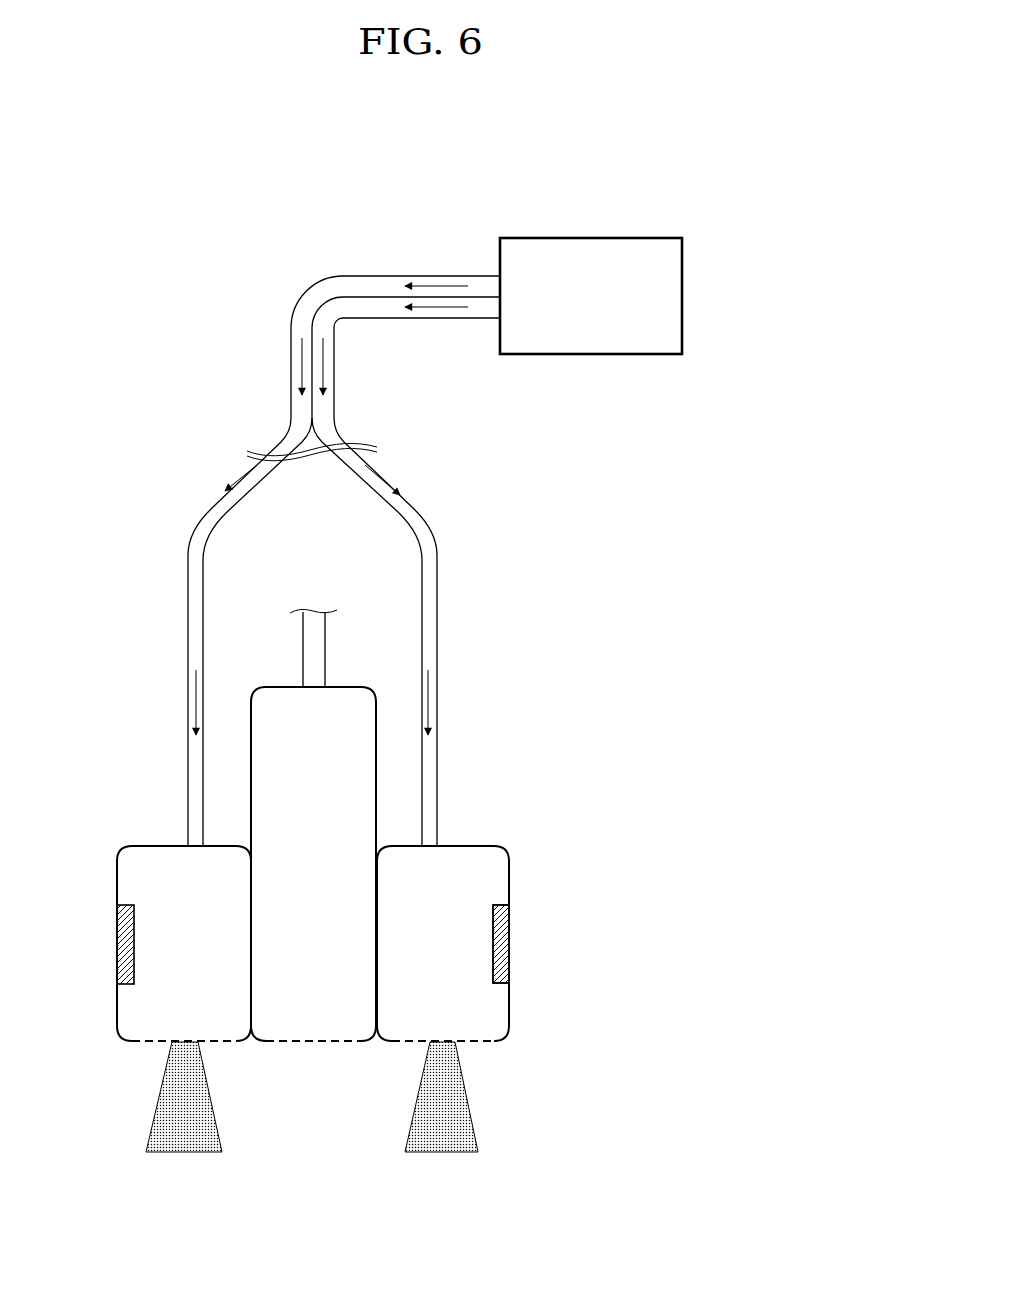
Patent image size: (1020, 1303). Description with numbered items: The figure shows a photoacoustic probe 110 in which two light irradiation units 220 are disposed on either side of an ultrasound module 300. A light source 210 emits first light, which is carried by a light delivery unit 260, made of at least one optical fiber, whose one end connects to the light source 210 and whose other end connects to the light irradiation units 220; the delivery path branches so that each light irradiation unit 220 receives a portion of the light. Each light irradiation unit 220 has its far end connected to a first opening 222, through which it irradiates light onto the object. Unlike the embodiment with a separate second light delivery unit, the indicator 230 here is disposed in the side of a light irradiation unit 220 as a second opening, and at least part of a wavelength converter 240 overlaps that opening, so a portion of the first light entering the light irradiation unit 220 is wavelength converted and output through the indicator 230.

The photoacoustic probe 110 is at (700, 207).
The light source 210 is at (592, 237).
The light delivery unit 260 is at (438, 627).
The ultrasound module 300 is at (308, 1022).
The light irradiation unit 220 is at (117, 1005).
The wavelength converter 240 is at (507, 921).
The indicator 230 is at (510, 955).
The first opening 222 is at (443, 1042).